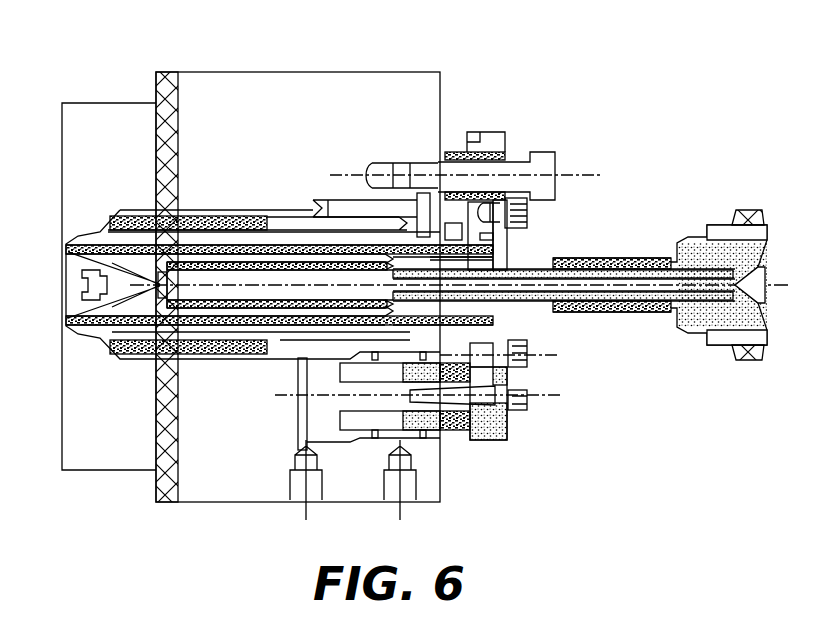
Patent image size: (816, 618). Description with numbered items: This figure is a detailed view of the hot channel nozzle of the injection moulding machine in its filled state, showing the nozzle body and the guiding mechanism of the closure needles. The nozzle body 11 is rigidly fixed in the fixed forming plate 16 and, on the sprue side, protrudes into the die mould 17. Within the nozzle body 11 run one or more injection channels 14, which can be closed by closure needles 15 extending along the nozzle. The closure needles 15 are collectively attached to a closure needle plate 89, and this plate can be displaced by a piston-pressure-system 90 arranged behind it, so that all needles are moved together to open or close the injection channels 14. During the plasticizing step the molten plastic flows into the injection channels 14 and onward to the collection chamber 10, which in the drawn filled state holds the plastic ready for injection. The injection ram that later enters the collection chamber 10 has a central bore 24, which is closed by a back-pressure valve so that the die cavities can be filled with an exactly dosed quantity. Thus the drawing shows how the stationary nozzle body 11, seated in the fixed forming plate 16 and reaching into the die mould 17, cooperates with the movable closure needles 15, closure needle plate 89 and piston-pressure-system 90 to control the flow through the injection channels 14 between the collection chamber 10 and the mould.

The collection chamber 10 is at (253, 292).
The nozzle body 11 is at (128, 240).
The injection channels 14 is at (121, 303).
The closure needles 15 is at (290, 235).
The fixed forming plate 16 is at (238, 100).
The die mould 17 is at (97, 450).
The central bore 24 is at (543, 305).
The closure needle plate 89 is at (485, 127).
The piston-pressure-system 90 is at (326, 410).